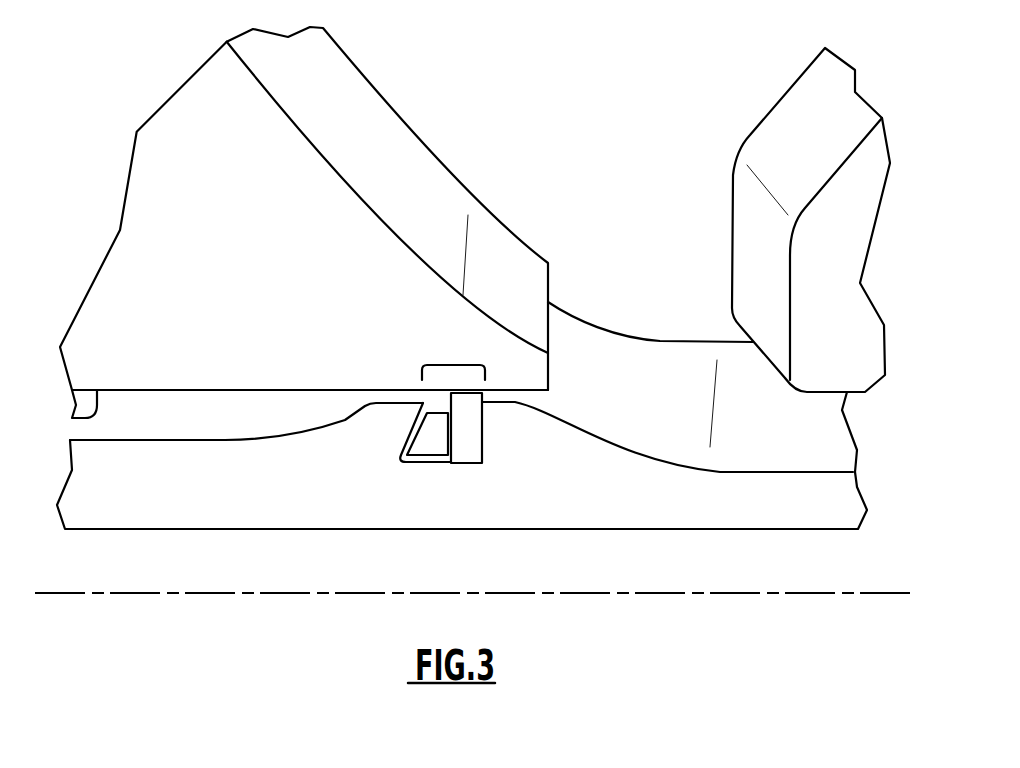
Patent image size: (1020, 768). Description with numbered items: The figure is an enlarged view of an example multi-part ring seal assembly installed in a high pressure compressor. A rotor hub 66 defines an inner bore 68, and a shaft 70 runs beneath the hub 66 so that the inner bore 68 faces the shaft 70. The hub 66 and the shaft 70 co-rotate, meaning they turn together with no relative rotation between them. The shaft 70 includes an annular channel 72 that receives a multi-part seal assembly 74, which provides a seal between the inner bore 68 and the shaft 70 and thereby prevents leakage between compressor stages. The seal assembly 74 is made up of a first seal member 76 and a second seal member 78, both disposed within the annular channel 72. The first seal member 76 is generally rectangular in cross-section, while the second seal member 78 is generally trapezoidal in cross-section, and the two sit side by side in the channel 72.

The hub 66 is at (293, 243).
The inner bore 68 is at (212, 405).
The shaft 70 is at (287, 492).
The annular channel 72 is at (416, 468).
The multi-part seal assembly 74 is at (447, 362).
The first seal member 76 is at (470, 437).
The second seal member 78 is at (432, 442).